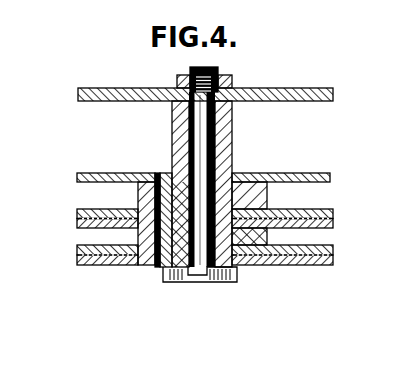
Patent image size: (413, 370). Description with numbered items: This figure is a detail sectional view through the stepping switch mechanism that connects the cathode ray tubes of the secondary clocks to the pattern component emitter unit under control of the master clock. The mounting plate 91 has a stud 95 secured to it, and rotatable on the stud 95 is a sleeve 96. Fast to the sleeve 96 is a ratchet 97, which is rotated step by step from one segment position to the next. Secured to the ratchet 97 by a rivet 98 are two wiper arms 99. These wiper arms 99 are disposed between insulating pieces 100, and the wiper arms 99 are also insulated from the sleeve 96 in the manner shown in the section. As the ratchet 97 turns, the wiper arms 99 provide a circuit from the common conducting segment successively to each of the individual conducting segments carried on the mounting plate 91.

The mounting plate 91 is at (271, 89).
The stud 95 is at (233, 116).
The sleeve 96 is at (232, 150).
The ratchet 97 is at (315, 173).
The rivet 98 is at (148, 267).
The wiper arms 99 is at (315, 267).
The insulating pieces 100 is at (333, 249).